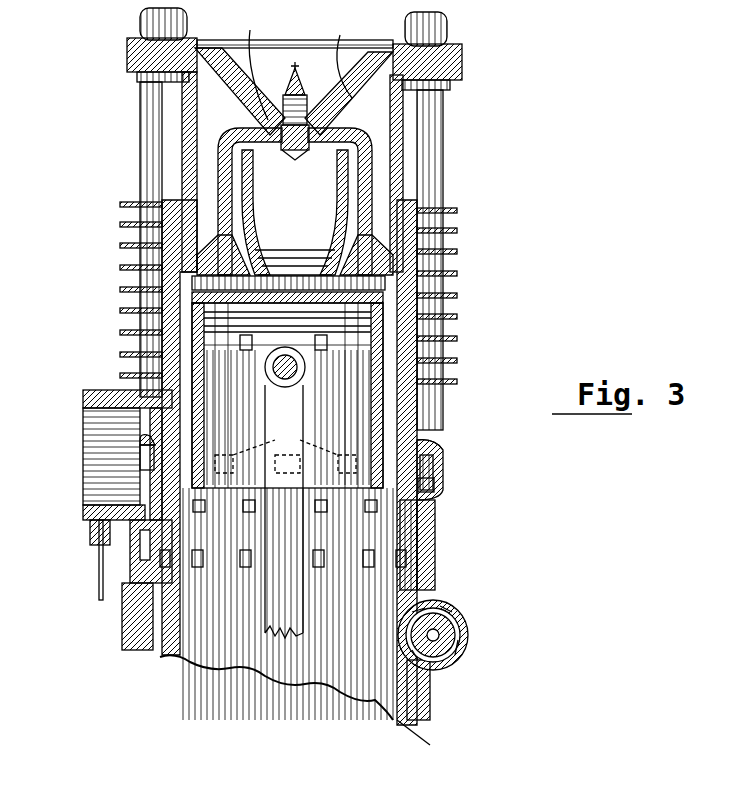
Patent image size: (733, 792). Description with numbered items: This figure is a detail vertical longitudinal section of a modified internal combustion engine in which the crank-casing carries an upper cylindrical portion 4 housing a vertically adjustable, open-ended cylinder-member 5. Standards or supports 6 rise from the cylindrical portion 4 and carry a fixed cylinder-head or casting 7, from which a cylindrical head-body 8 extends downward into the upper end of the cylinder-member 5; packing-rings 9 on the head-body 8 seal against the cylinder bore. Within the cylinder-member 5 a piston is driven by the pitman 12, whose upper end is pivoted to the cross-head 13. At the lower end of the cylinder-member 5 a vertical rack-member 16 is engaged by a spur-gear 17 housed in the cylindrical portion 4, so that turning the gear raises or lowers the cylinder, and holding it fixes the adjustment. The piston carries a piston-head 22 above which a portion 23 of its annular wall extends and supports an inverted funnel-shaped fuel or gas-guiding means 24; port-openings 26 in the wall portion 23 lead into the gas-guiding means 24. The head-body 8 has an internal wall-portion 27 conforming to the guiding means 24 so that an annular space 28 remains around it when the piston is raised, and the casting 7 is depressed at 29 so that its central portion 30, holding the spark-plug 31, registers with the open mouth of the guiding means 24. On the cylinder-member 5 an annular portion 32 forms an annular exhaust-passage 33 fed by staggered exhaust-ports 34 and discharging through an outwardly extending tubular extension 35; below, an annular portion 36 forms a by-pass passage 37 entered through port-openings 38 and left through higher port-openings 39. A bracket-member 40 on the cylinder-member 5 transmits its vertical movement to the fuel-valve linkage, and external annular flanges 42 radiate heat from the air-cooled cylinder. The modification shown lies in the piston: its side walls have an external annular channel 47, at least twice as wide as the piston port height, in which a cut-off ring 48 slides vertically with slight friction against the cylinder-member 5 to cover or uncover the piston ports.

The cylindrical portion 4 is at (122, 625).
The cylinder-member 5 is at (125, 288).
The standards or supports 6 is at (150, 136).
The cylinder-head or casting 7 is at (127, 48).
The head-body 8 is at (182, 108).
The packing-rings 9 is at (120, 224).
The pitman 12 is at (284, 638).
The cross-head 13 is at (280, 385).
The rack-member 16 is at (424, 742).
The spur-gear 17 is at (468, 630).
The piston-head 22 is at (288, 382).
The portion of the annular wall 23 is at (125, 248).
The fuel or gas-guiding means 24 is at (325, 218).
The port-openings 26 is at (371, 310).
The internal wall-portion 27 is at (225, 160).
The annular space 28 is at (337, 175).
The depression 29 is at (340, 54).
The centrally located portion 30 is at (345, 128).
The spark-plug 31 is at (250, 64).
The annular portion 32 is at (443, 455).
The annular exhaust-passage 33 is at (140, 445).
The exhaust-ports 34 is at (58, 465).
The tubular extension 35 is at (83, 396).
The annular portion 36 is at (130, 548).
The by-pass passage 37 is at (83, 515).
The port-openings or passages 38 is at (318, 562).
The port-openings or passages 39 is at (315, 512).
The bracket-member 40 is at (99, 580).
The annular flanges 42 is at (125, 330).
The annular channel or depression 47 is at (125, 352).
The cut-off ring 48 is at (230, 375).